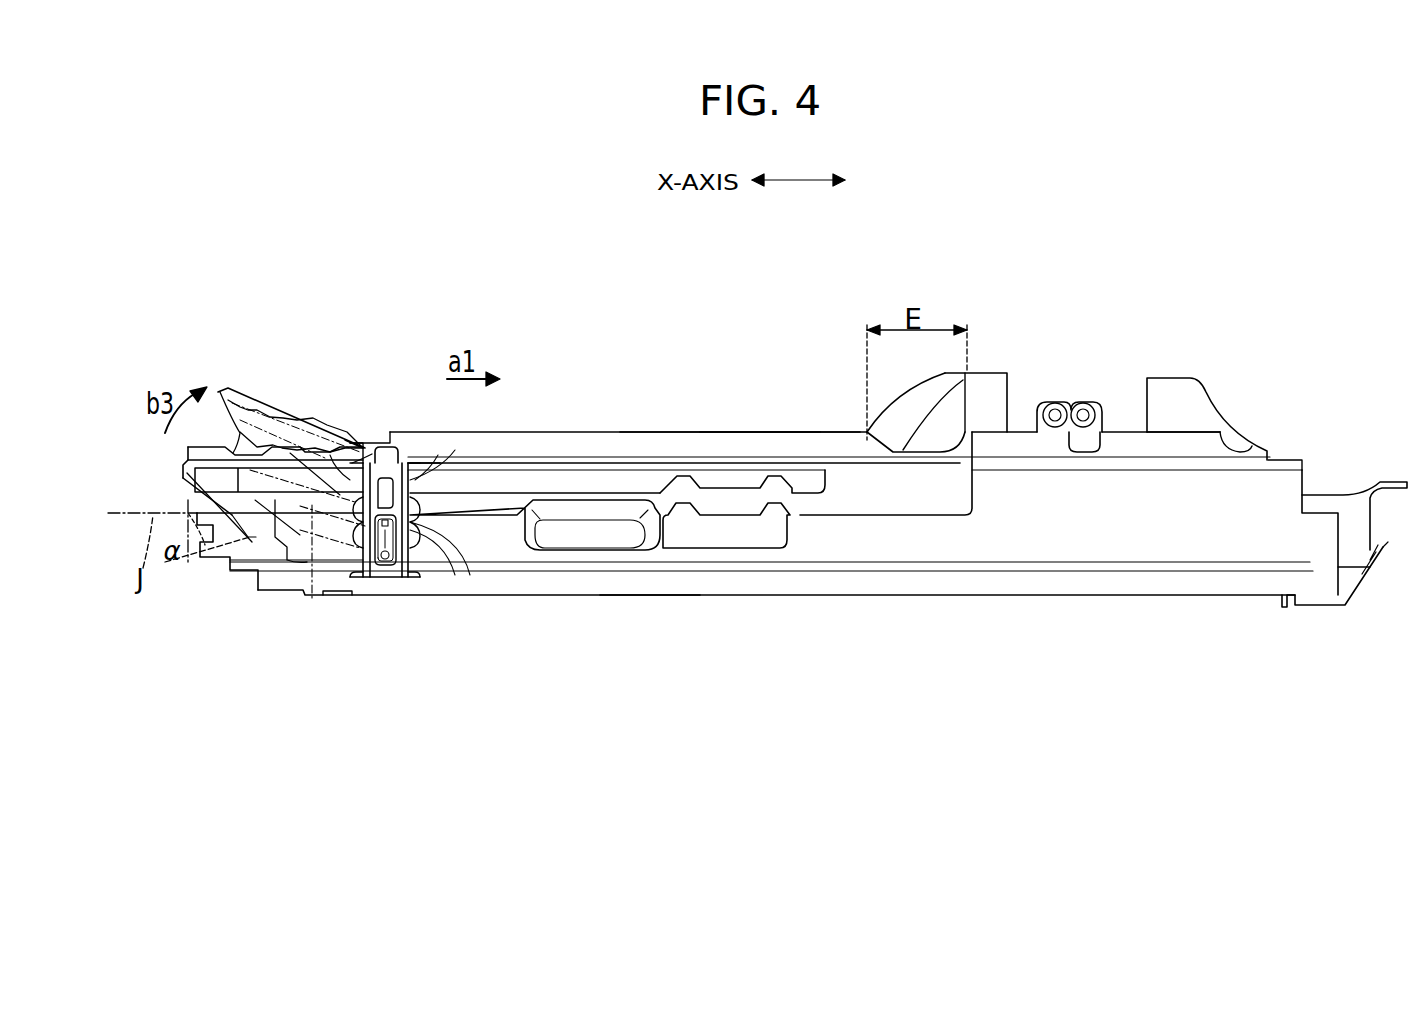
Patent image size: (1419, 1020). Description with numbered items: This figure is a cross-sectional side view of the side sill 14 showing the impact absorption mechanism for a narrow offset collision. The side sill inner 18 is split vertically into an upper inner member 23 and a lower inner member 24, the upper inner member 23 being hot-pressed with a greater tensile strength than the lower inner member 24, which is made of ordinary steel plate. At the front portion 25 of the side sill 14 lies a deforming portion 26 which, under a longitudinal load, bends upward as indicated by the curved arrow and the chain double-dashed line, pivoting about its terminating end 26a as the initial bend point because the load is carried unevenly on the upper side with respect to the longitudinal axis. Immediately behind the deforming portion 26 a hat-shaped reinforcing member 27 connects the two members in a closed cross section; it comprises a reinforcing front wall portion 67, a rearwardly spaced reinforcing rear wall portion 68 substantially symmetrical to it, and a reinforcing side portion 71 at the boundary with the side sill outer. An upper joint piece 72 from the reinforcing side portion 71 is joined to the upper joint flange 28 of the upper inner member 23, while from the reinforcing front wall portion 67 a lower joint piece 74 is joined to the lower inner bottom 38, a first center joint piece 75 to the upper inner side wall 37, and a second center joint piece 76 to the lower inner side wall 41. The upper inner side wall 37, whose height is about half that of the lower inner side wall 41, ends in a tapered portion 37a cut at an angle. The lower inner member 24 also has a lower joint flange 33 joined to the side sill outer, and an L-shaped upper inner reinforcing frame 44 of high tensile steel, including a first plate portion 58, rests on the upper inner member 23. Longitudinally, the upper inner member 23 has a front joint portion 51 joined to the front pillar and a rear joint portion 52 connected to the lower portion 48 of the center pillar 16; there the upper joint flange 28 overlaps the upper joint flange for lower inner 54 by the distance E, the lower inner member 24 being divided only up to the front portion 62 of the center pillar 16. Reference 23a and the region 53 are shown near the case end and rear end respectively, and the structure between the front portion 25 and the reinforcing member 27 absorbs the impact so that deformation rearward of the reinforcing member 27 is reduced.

The side sill 14 is at (775, 352).
The center pillar 16 is at (985, 395).
The side sill inner 18 is at (1118, 430).
The upper inner member 23 is at (625, 428).
The case end portion 23a is at (362, 460).
The lower inner member 24 is at (1030, 597).
The front portion 25 is at (243, 568).
The deforming portion 26 is at (355, 385).
The terminating end 26a is at (355, 445).
The reinforcing member 27 is at (417, 468).
The upper joint flange 28 is at (722, 430).
The lower joint flange 33 is at (776, 590).
The upper inner side wall 37 is at (493, 505).
The tapered portion 37a is at (203, 480).
The lower inner bottom 38 is at (838, 573).
The lower inner side wall 41 is at (900, 540).
The upper inner reinforcing frame 44 is at (582, 492).
The lower portion of the center pillar 48 is at (1010, 392).
The front joint portion 51 is at (276, 505).
The rear joint portion 52 is at (951, 505).
The rear end portion 53 is at (996, 540).
The upper joint flange for lower inner 54 is at (1204, 440).
The first plate portion 58 is at (630, 520).
The front portion of the center pillar 62 is at (925, 410).
The reinforcing front wall portion 67 is at (311, 600).
The reinforcing rear wall portion 68 is at (450, 565).
The reinforcing side portion 71 is at (385, 562).
The upper joint piece 72 is at (372, 450).
The lower joint piece 74 is at (364, 577).
The first center joint piece 75 is at (342, 470).
The second center joint piece 76 is at (430, 522).